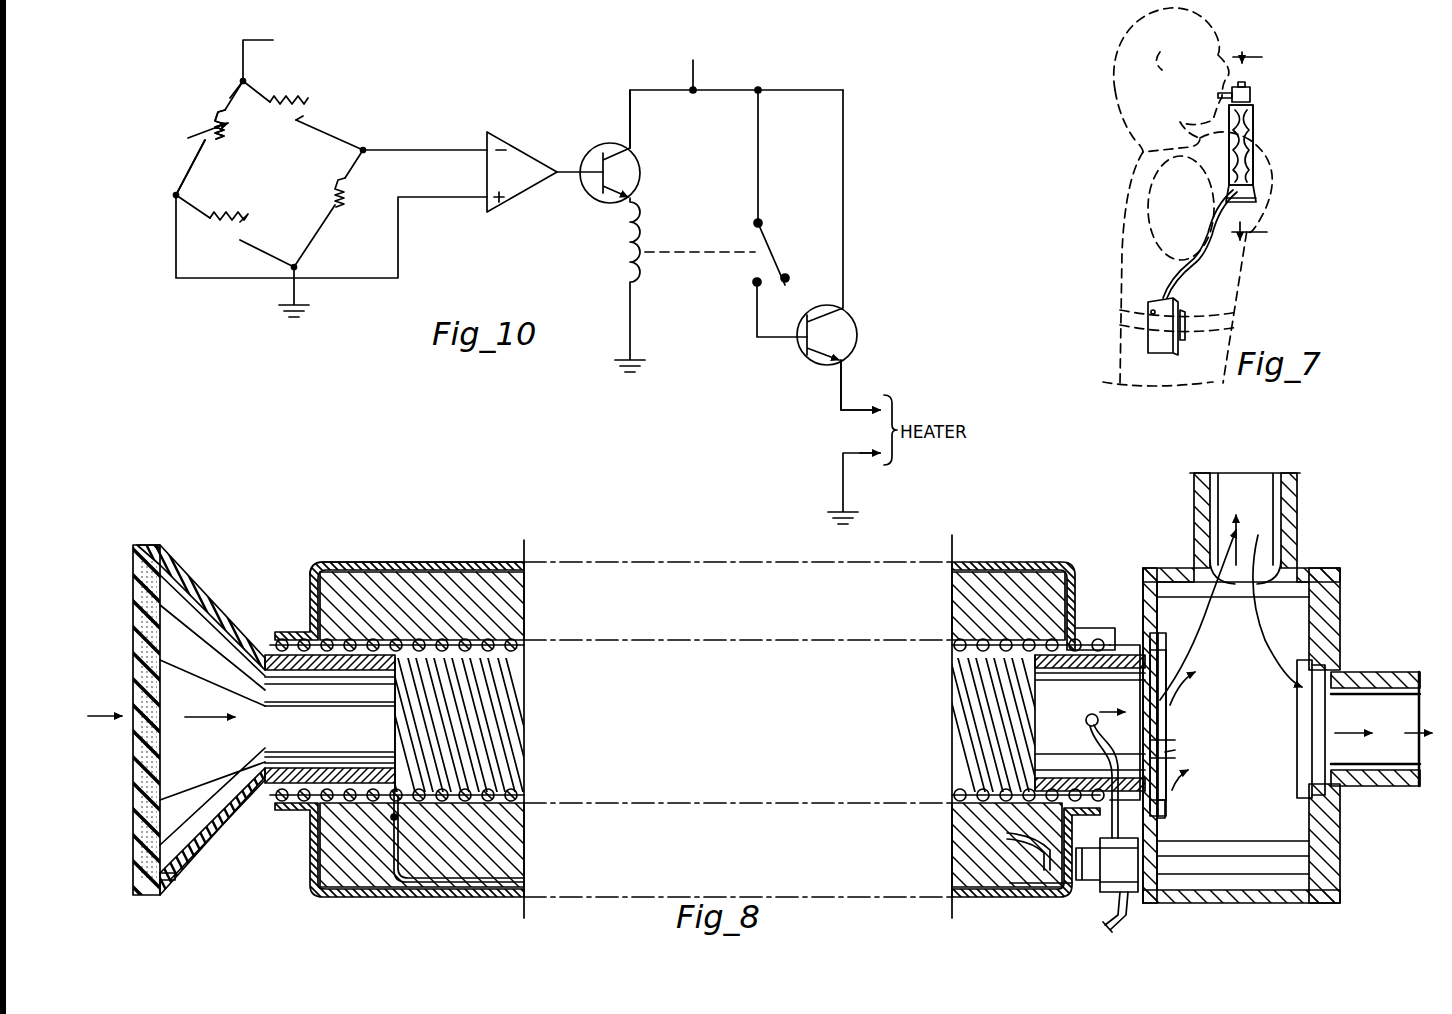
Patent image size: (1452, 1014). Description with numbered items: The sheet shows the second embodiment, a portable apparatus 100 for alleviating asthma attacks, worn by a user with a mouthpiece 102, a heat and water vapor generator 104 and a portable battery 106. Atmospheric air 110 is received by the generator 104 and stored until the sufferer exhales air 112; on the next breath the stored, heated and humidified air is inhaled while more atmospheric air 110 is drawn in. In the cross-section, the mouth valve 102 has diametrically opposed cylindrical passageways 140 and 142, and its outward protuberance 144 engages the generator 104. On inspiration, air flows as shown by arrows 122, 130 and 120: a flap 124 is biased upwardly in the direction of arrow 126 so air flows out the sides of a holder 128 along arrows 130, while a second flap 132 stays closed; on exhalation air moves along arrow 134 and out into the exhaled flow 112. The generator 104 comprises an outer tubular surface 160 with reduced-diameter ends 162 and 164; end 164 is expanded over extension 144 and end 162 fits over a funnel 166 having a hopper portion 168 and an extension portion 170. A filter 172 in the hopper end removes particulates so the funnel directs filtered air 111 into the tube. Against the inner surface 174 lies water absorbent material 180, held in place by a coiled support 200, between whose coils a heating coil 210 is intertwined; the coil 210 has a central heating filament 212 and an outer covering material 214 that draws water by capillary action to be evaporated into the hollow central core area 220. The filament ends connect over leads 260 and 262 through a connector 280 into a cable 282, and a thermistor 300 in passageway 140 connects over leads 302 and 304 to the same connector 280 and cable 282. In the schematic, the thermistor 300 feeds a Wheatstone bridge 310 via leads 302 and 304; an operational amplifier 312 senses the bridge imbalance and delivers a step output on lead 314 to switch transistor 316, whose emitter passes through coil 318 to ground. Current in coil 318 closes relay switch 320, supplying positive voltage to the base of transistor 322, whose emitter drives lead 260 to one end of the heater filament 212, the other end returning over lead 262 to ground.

In FIG. 7, the portable apparatus 100 is at (1278, 158).
In FIG. 7, the mouthpiece 102 is at (1258, 95).
In FIG. 8, the mouthpiece 102 is at (1300, 552).
In FIG. 7, the heat and water vapor generator 104 is at (1258, 160).
In FIG. 8, the heat and water vapor generator 104 is at (415, 547).
In FIG. 7, the portable battery 106 is at (1148, 304).
In FIG. 7, the atmospheric air 110 is at (1245, 212).
In FIG. 8, the atmospheric air 110 is at (103, 722).
In FIG. 8, the filtered air 111 is at (215, 721).
In FIG. 7, the exhaled air 112 is at (1250, 66).
In FIG. 8, the exhaled air 112 is at (1375, 733).
In FIG. 8, the inspiration air flow arrow 120 is at (1190, 569).
In FIG. 8, the inspired air flow arrow 122 is at (1166, 698).
In FIG. 8, the flap 124 is at (1180, 725).
In FIG. 8, the flap bias direction arrow 126 is at (1175, 722).
In FIG. 8, the holder 128 is at (1170, 812).
In FIG. 8, the air flow arrows 130 is at (1181, 656).
In FIG. 8, the second flap 132 is at (1305, 765).
In FIG. 8, the exhalation air flow arrow 134 is at (1300, 690).
In FIG. 8, the passageway 140 is at (1075, 714).
In FIG. 8, the passageway 142 is at (1415, 757).
In FIG. 8, the outward protuberance 144 is at (1124, 648).
In FIG. 8, the outer tubular surface 160 is at (1022, 530).
In FIG. 8, the end 162 is at (286, 640).
In FIG. 8, the end 164 is at (1086, 627).
In FIG. 8, the funnel 166 is at (186, 554).
In FIG. 8, the hopper portion 168 is at (178, 830).
In FIG. 8, the extension portion 170 is at (332, 766).
In FIG. 8, the filter 172 is at (146, 595).
In FIG. 8, the inner surface 174 is at (444, 560).
In FIG. 8, the water absorbent material 180 is at (373, 565).
In FIG. 8, the coiled support 200 is at (463, 656).
In FIG. 8, the heating coil 210 is at (490, 682).
In FIG. 8, the heating filament 212 is at (467, 628).
In FIG. 8, the covering material 214 is at (400, 678).
In FIG. 8, the central core area 220 is at (460, 752).
In FIG. 10, the lead 260 is at (850, 410).
In FIG. 8, the lead 260 is at (507, 884).
In FIG. 10, the lead 262 is at (860, 455).
In FIG. 8, the lead 262 is at (1007, 834).
In FIG. 8, the connector 280 is at (1080, 892).
In FIG. 7, the cable 282 is at (1205, 255).
In FIG. 8, the cable 282 is at (1118, 922).
In FIG. 10, the thermistor 300 is at (215, 126).
In FIG. 8, the thermistor 300 is at (1087, 727).
In FIG. 10, the lead 302 is at (188, 176).
In FIG. 8, the lead 302 is at (1175, 760).
In FIG. 10, the lead 304 is at (230, 98).
In FIG. 8, the lead 304 is at (1165, 742).
In FIG. 10, the Wheatstone bridge 310 is at (350, 135).
In FIG. 10, the operational amplifier 312 is at (528, 141).
In FIG. 10, the lead 314 is at (588, 142).
In FIG. 10, the transistor 316 is at (635, 152).
In FIG. 10, the coil 318 is at (643, 232).
In FIG. 10, the relay switch 320 is at (770, 247).
In FIG. 10, the transistor 322 is at (852, 315).